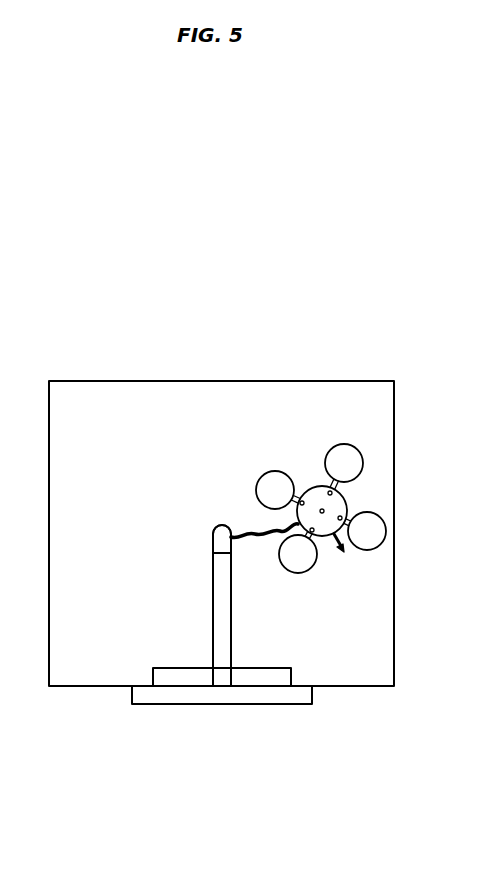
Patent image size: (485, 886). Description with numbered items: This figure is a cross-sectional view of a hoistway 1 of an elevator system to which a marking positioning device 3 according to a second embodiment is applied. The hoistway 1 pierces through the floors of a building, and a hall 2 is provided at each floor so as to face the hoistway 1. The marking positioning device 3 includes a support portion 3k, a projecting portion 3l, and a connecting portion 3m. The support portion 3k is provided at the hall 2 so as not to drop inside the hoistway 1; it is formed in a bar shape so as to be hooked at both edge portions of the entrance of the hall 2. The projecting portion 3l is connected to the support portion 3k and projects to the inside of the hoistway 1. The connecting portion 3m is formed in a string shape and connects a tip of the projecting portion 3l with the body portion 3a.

The hoistway 1 is at (355, 381).
The hall 2 is at (225, 750).
The marking positioning device 3 is at (186, 504).
The body portion 3a is at (309, 485).
The support portion 3k is at (150, 704).
The projecting portion 3l is at (232, 629).
The connecting portion 3m is at (243, 528).